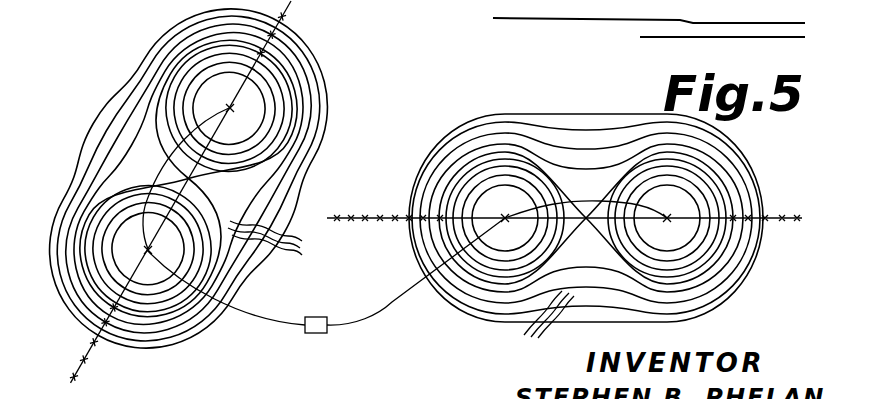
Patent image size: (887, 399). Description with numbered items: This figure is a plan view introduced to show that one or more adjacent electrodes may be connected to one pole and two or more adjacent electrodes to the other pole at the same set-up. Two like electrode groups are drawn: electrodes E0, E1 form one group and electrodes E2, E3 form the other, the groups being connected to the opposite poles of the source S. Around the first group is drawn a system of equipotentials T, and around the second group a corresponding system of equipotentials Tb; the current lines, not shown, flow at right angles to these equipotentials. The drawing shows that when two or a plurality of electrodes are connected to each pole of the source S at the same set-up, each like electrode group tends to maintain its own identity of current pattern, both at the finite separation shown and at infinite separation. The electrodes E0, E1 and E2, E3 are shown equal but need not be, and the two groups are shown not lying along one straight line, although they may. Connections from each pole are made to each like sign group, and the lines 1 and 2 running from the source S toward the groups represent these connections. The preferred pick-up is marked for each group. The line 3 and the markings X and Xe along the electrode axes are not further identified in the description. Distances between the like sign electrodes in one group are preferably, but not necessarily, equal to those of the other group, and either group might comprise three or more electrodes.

The electrode E0 is at (231, 108).
The electrode E1 is at (149, 251).
The electrode E2 is at (505, 216).
The electrode E3 is at (667, 216).
The axis line X is at (385, 218).
The external axis portion Xe is at (812, 201).
The system of equipotentials T is at (552, 240).
The system of equipotentials Tb is at (401, 281).
The separatrix flux line 3 is at (590, 205).
The conductor 1 is at (267, 323).
The conductor 2 is at (392, 302).
The source S is at (316, 325).